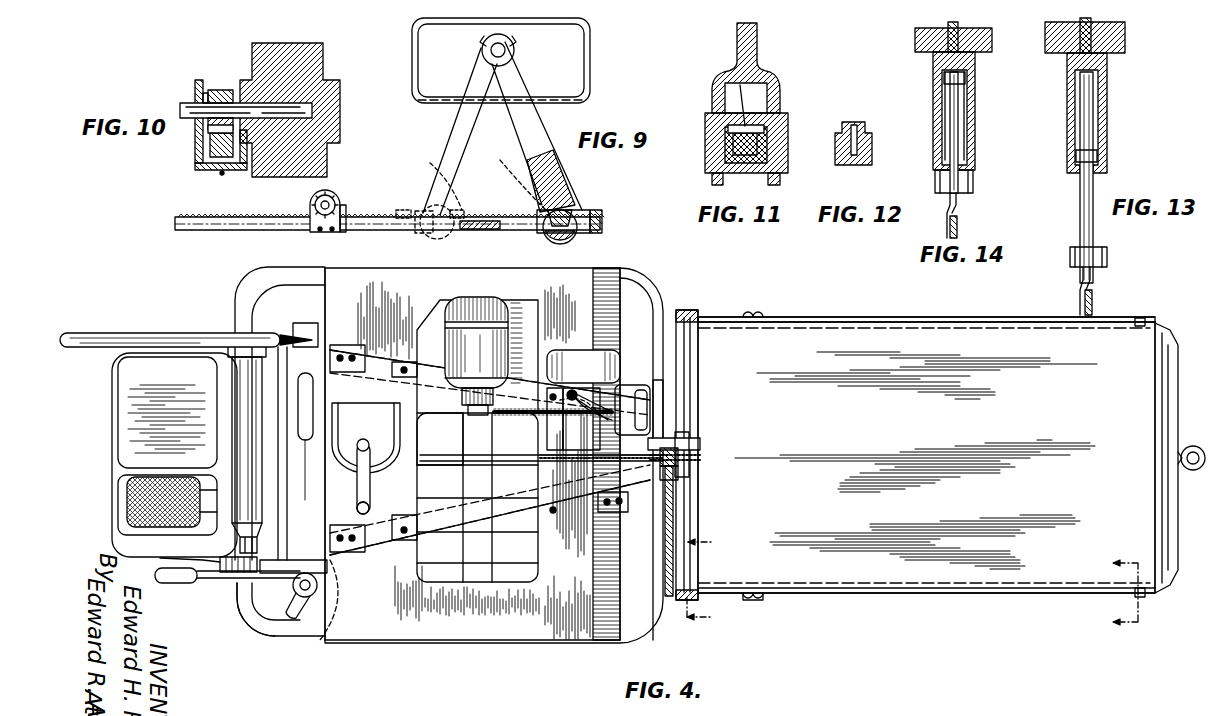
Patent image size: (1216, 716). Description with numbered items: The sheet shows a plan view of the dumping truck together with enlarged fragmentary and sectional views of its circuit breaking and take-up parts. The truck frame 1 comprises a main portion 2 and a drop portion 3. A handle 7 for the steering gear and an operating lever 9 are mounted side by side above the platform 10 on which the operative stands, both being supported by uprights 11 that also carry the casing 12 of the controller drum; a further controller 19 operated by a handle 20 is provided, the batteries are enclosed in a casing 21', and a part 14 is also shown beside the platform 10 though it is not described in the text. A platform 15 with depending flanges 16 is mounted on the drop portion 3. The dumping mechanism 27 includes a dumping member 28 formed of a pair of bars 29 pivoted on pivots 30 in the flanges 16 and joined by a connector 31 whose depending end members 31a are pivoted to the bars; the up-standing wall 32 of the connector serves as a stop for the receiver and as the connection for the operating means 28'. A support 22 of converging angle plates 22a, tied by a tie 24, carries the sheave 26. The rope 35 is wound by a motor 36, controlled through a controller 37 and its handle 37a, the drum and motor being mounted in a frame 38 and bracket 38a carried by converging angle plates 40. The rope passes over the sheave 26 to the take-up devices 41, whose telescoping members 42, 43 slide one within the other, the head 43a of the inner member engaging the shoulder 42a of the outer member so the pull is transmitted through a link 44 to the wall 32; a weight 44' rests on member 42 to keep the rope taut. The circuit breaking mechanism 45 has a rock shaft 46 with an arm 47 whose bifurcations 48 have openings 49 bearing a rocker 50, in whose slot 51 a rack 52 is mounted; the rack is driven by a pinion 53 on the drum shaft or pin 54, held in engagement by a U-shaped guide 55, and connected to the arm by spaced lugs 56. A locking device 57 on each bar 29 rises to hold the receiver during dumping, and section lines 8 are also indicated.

In FIG. 4, the truck frame 1 is at (494, 468).
In FIG. 4, the main portion 2 is at (240, 290).
In FIG. 4, the drop portion 3 is at (1172, 410).
In FIG. 4, the handle 7 is at (152, 333).
In FIG. 4, the section line 8- 8 is at (1115, 593).
In FIG. 4, the operating lever 9 is at (210, 584).
In FIG. 4, the platform 10 is at (118, 420).
In FIG. 4, the uprights 11 is at (305, 373).
In FIG. 4, the casing 12 is at (236, 382).
In FIG. 4, the pad 14 is at (127, 500).
In FIG. 4, the platform 15 is at (940, 590).
In FIG. 4, the depending sides or flanges 16 is at (852, 594).
In FIG. 4, the controller 19 is at (280, 612).
In FIG. 4, the handle 20 is at (292, 615).
In FIG. 4, the casing 21' is at (472, 650).
In FIG. 4, the support 22 is at (668, 505).
In FIG. 4, the angle plates or beams 22a is at (663, 410).
In FIG. 4, the tie 24 is at (688, 440).
In FIG. 4, the sheave 26 is at (692, 448).
In FIG. 4, the dumping mechanism 27 is at (489, 454).
In FIG. 4, the dumping member 28 is at (926, 301).
In FIG. 4, the operating means 28' is at (541, 454).
In FIG. 4, the bars 29 is at (880, 320).
In FIG. 4, the pivot 30 is at (1140, 318).
In FIG. 4, the connector 31 is at (700, 507).
In FIG. 4, the depending end members 31a is at (690, 310).
In FIG. 14, the up-standing wall 32 is at (958, 226).
In FIG. 13, the up-standing wall 32 is at (1093, 295).
In FIG. 4, the up-standing wall 32 is at (685, 480).
In FIG. 14, the rope or flexible element 35 is at (915, 38).
In FIG. 13, the rope or flexible element 35 is at (1045, 35).
In FIG. 4, the rope or flexible element 35 is at (578, 462).
In FIG. 4, the motor 36 is at (492, 310).
In FIG. 4, the controller 37 is at (366, 458).
In FIG. 4, the handle 37a is at (357, 500).
In FIG. 10, the frame 38 is at (300, 58).
In FIG. 4, the frame 38 is at (477, 497).
In FIG. 4, the bracket 38a is at (445, 290).
In FIG. 4, the converging angle plates 40 is at (380, 362).
In FIG. 14, the take-up devices 41 is at (970, 111).
In FIG. 13, the take-up devices 41 is at (1103, 113).
In FIG. 14, the outer telescoping member 42 is at (972, 95).
In FIG. 13, the outer telescoping member 42 is at (1105, 95).
In FIG. 14, the shoulder 42a is at (935, 172).
In FIG. 13, the shoulder 42a is at (1070, 178).
In FIG. 14, the inner telescoping member 43 is at (960, 147).
In FIG. 13, the inner telescoping member 43 is at (1080, 208).
In FIG. 14, the head 43a is at (944, 78).
In FIG. 13, the head 43a is at (1076, 152).
In FIG. 14, the link 44 is at (929, 215).
In FIG. 13, the link 44 is at (1061, 291).
In FIG. 14, the weight 44' is at (924, 45).
In FIG. 13, the weight 44' is at (1123, 35).
In FIG. 4, the weight 44' is at (723, 441).
In FIG. 9, the circuit breaking mechanism 45 is at (517, 60).
In FIG. 4, the circuit breaking mechanism 45 is at (600, 350).
In FIG. 9, the rock shaft 46 is at (516, 50).
In FIG. 9, the arm 47 is at (508, 135).
In FIG. 11, the arm 47 is at (758, 40).
In FIG. 4, the arm 47 is at (618, 420).
In FIG. 9, the bifurcations 48 is at (572, 208).
In FIG. 11, the bifurcations 48 is at (712, 98).
In FIG. 9, the openings 49 is at (438, 240).
In FIG. 11, the openings 49 is at (715, 186).
In FIG. 9, the rocker 50 is at (428, 233).
In FIG. 11, the rocker 50 is at (705, 138).
In FIG. 4, the rocker 50 is at (608, 425).
In FIG. 9, the slot or opening 51 is at (479, 177).
In FIG. 11, the slot or opening 51 is at (740, 85).
In FIG. 10, the rack 52 is at (208, 142).
In FIG. 9, the rack 52 is at (258, 233).
In FIG. 11, the rack 52 is at (770, 145).
In FIG. 12, the rack 52 is at (873, 143).
In FIG. 4, the rack 52 is at (554, 450).
In FIG. 10, the pinion 53 is at (218, 88).
In FIG. 9, the pinion 53 is at (338, 205).
In FIG. 4, the pinion 53 is at (498, 428).
In FIG. 10, the drum shaft or pin 54 is at (258, 110).
In FIG. 9, the drum shaft or pin 54 is at (327, 195).
In FIG. 4, the drum shaft or pin 54 is at (520, 416).
In FIG. 10, the guide 55 is at (198, 166).
In FIG. 9, the guide 55 is at (310, 205).
In FIG. 9, the lugs 56 is at (405, 208).
In FIG. 12, the lugs 56 is at (862, 122).
In FIG. 4, the locking device 57 is at (752, 313).